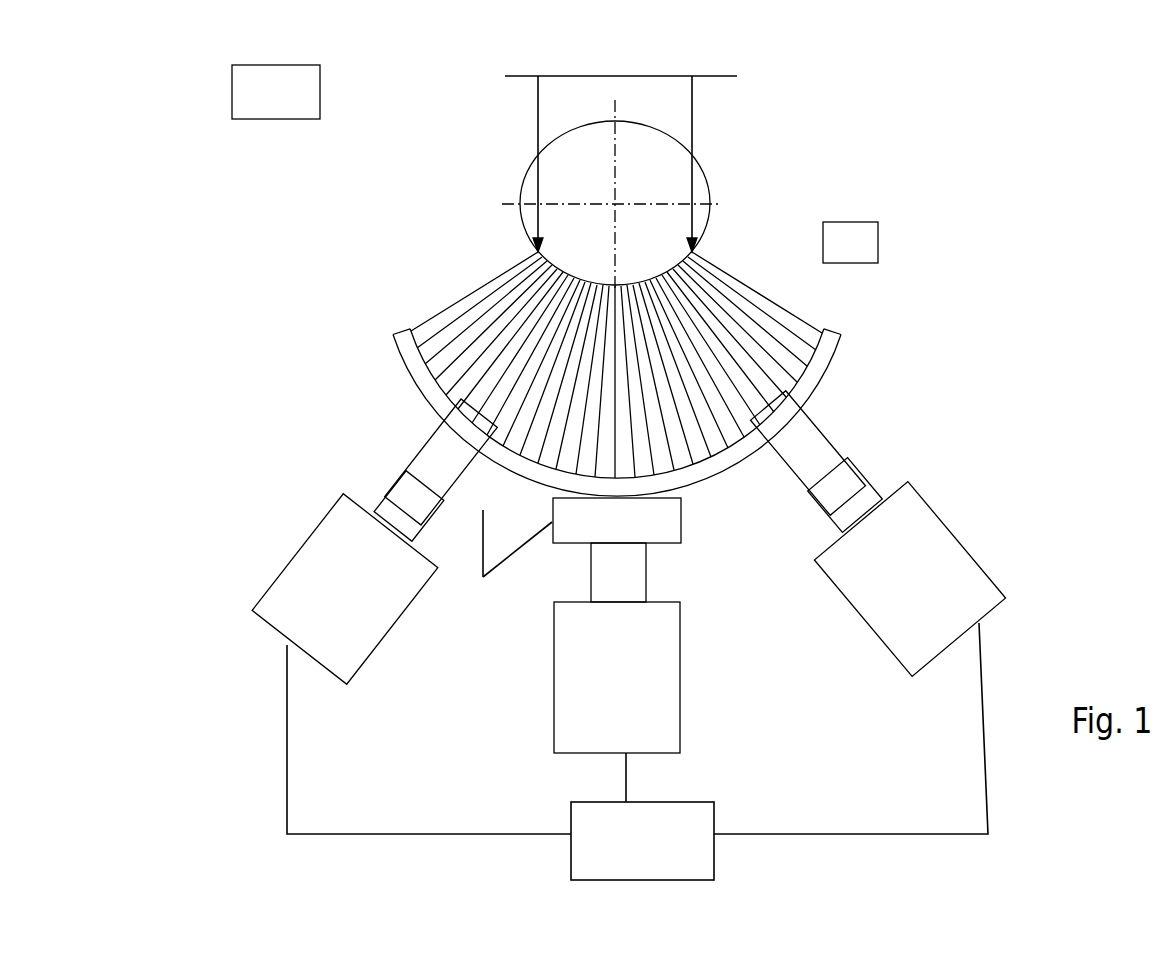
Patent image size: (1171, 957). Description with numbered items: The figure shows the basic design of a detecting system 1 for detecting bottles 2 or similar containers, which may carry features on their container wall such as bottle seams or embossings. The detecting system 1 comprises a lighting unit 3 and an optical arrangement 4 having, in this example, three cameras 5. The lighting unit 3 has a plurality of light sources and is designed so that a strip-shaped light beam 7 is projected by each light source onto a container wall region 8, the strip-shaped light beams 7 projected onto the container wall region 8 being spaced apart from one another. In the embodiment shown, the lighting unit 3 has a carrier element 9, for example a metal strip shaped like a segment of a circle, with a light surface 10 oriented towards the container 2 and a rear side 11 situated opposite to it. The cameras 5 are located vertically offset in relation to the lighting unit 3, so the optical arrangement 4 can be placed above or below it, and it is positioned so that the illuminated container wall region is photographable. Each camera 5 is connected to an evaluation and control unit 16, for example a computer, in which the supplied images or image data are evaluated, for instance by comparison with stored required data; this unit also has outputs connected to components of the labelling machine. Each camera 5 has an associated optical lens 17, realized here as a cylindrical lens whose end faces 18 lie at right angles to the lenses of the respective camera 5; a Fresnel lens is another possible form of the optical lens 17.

The detecting system 1 is at (265, 398).
The bottle 2 is at (637, 142).
The lighting unit 3 is at (871, 379).
The optical arrangement 4 is at (748, 635).
The camera 5 is at (1030, 507).
The strip-shaped light beam 7 is at (558, 366).
The container wall region 8 is at (621, 151).
The carrier element 9 is at (838, 331).
The light surface 10 is at (799, 341).
The rear side 11 is at (859, 342).
The evaluation and control unit 16 is at (637, 751).
The optical lens 17 is at (625, 467).
The end face 18 is at (507, 562).